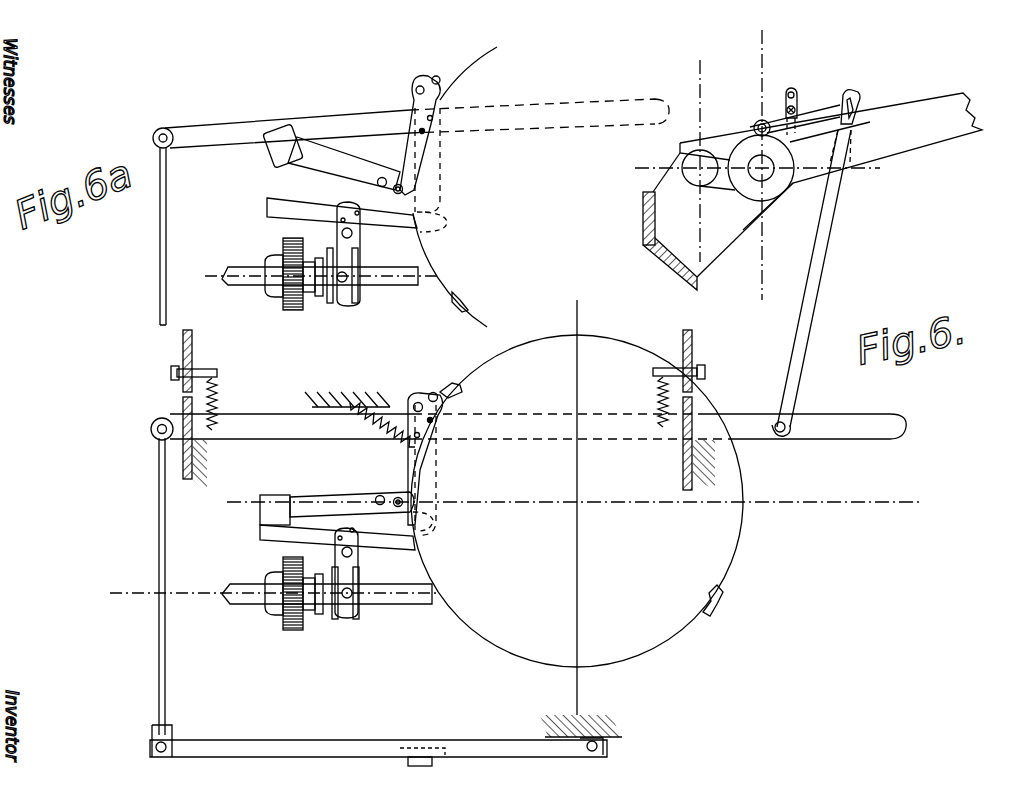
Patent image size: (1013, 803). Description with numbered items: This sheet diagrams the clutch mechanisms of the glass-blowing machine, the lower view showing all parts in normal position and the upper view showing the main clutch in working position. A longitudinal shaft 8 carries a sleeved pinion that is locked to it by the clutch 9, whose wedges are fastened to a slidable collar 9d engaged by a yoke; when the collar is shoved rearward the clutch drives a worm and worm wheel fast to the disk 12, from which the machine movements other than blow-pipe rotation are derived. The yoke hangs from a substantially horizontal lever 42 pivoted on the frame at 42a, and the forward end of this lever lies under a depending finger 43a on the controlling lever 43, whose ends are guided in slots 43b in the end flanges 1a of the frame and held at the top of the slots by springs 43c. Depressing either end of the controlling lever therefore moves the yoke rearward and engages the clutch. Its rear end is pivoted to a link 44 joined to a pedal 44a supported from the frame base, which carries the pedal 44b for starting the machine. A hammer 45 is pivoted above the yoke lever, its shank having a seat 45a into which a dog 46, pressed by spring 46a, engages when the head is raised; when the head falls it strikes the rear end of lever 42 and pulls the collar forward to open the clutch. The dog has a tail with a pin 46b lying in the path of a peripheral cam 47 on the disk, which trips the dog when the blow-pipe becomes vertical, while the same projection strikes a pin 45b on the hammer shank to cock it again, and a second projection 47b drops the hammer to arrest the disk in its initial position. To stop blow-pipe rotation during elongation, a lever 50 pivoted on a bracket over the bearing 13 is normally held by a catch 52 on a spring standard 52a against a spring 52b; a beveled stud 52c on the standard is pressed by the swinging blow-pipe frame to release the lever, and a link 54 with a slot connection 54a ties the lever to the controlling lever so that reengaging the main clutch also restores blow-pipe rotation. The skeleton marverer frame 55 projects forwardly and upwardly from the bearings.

In FIG. 6, the end flange 1a is at (178, 366).
In FIG. 6A, the shaft 8 is at (390, 282).
In FIG. 6, the shaft 8 is at (385, 598).
In FIG. 6A, the clutch 9 is at (315, 300).
In FIG. 6, the clutch 9 is at (320, 615).
In FIG. 6A, the collar 9d is at (343, 296).
In FIG. 6, the collar 9d is at (345, 620).
In FIG. 6A, the disk 12 is at (478, 93).
In FIG. 6, the disk 12 is at (513, 630).
In FIG. 6, the transverse bearing 13 is at (715, 235).
In FIG. 6A, the horizontal lever 42 is at (278, 214).
In FIG. 6, the horizontal lever 42 is at (278, 535).
In FIG. 6A, the pivot 42a is at (352, 236).
In FIG. 6, the pivot 42a is at (333, 557).
In FIG. 6A, the controlling lever 43 is at (338, 125).
In FIG. 6, the controlling lever 43 is at (250, 428).
In FIG. 6A, the depending finger 43a is at (438, 175).
In FIG. 6, the depending finger 43a is at (438, 475).
In FIG. 6, the slot 43b is at (200, 460).
In FIG. 6, the spring 43c is at (215, 395).
In FIG. 6A, the link 44 is at (165, 272).
In FIG. 6, the link 44 is at (163, 528).
In FIG. 6, the pedal 44a is at (323, 753).
In FIG. 6, the pedal 44b is at (430, 763).
In FIG. 6A, the hammer 45 is at (300, 165).
In FIG. 6, the hammer 45 is at (290, 500).
In FIG. 6, the seat 45a is at (405, 495).
In FIG. 6A, the pin 45b is at (398, 185).
In FIG. 6, the pin 45b is at (398, 508).
In FIG. 6A, the dog 46 is at (420, 105).
In FIG. 6, the dog 46 is at (422, 392).
In FIG. 6, the spring 46a is at (380, 405).
In FIG. 6A, the pin 46b is at (432, 80).
In FIG. 6, the pin 46b is at (435, 398).
In FIG. 6, the peripheral cam 47 is at (718, 606).
In FIG. 6A, the second peripheral projection 47b is at (462, 300).
In FIG. 6, the second peripheral projection 47b is at (462, 389).
In FIG. 6, the lever 50 is at (710, 143).
In FIG. 6, the catch 52 is at (786, 100).
In FIG. 6, the spring standard 52a is at (798, 110).
In FIG. 6, the spring 52b is at (762, 118).
In FIG. 6, the stud 52c is at (795, 95).
In FIG. 6, the link 54 is at (835, 215).
In FIG. 6, the slot connection 54a is at (855, 100).
In FIG. 6, the skeleton frame 55 is at (900, 128).